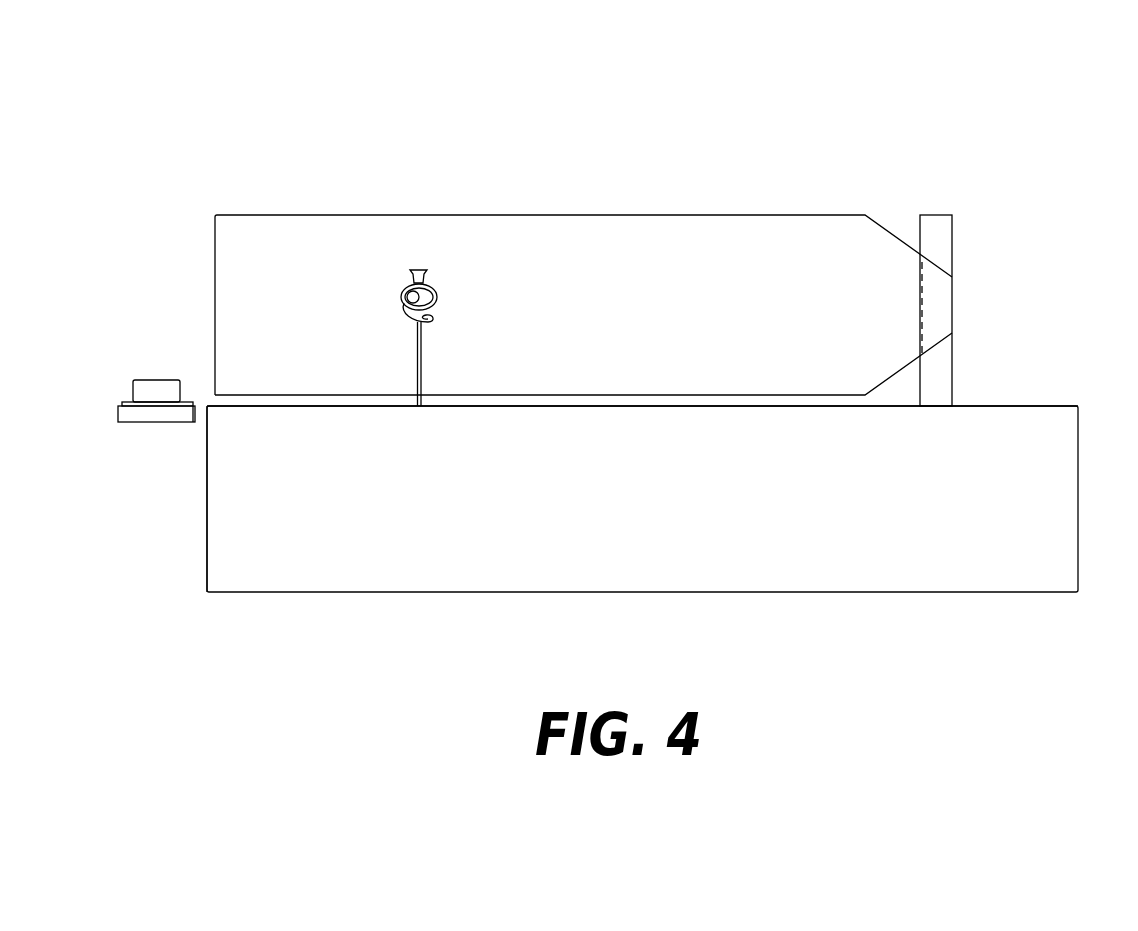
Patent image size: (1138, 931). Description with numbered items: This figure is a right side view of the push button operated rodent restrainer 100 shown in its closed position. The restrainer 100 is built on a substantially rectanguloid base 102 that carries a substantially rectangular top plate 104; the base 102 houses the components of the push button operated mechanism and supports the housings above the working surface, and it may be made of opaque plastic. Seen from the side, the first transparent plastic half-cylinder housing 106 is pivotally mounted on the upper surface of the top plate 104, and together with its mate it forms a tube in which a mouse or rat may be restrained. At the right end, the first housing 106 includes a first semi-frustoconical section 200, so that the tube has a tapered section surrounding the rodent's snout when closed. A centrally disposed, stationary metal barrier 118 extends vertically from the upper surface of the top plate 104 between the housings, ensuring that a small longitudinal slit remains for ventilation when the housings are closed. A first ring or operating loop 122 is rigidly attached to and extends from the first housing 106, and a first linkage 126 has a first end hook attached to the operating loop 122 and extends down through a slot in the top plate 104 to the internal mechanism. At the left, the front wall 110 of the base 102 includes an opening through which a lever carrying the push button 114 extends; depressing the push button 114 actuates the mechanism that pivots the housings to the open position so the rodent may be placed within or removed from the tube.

The push button operated rodent restrainer 100 is at (824, 142).
The base 102 is at (810, 555).
The top plate 104 is at (1040, 406).
The first transparent plastic half-cylinder housing 106 is at (673, 327).
The front wall 110 is at (207, 538).
The push button 114 is at (153, 395).
The centrally disposed, stationary metal barrier 118 is at (952, 232).
The first ring or operating loop 122 is at (432, 287).
The first linkage 126 is at (417, 358).
The first semi-frustoconical section 200 is at (907, 313).